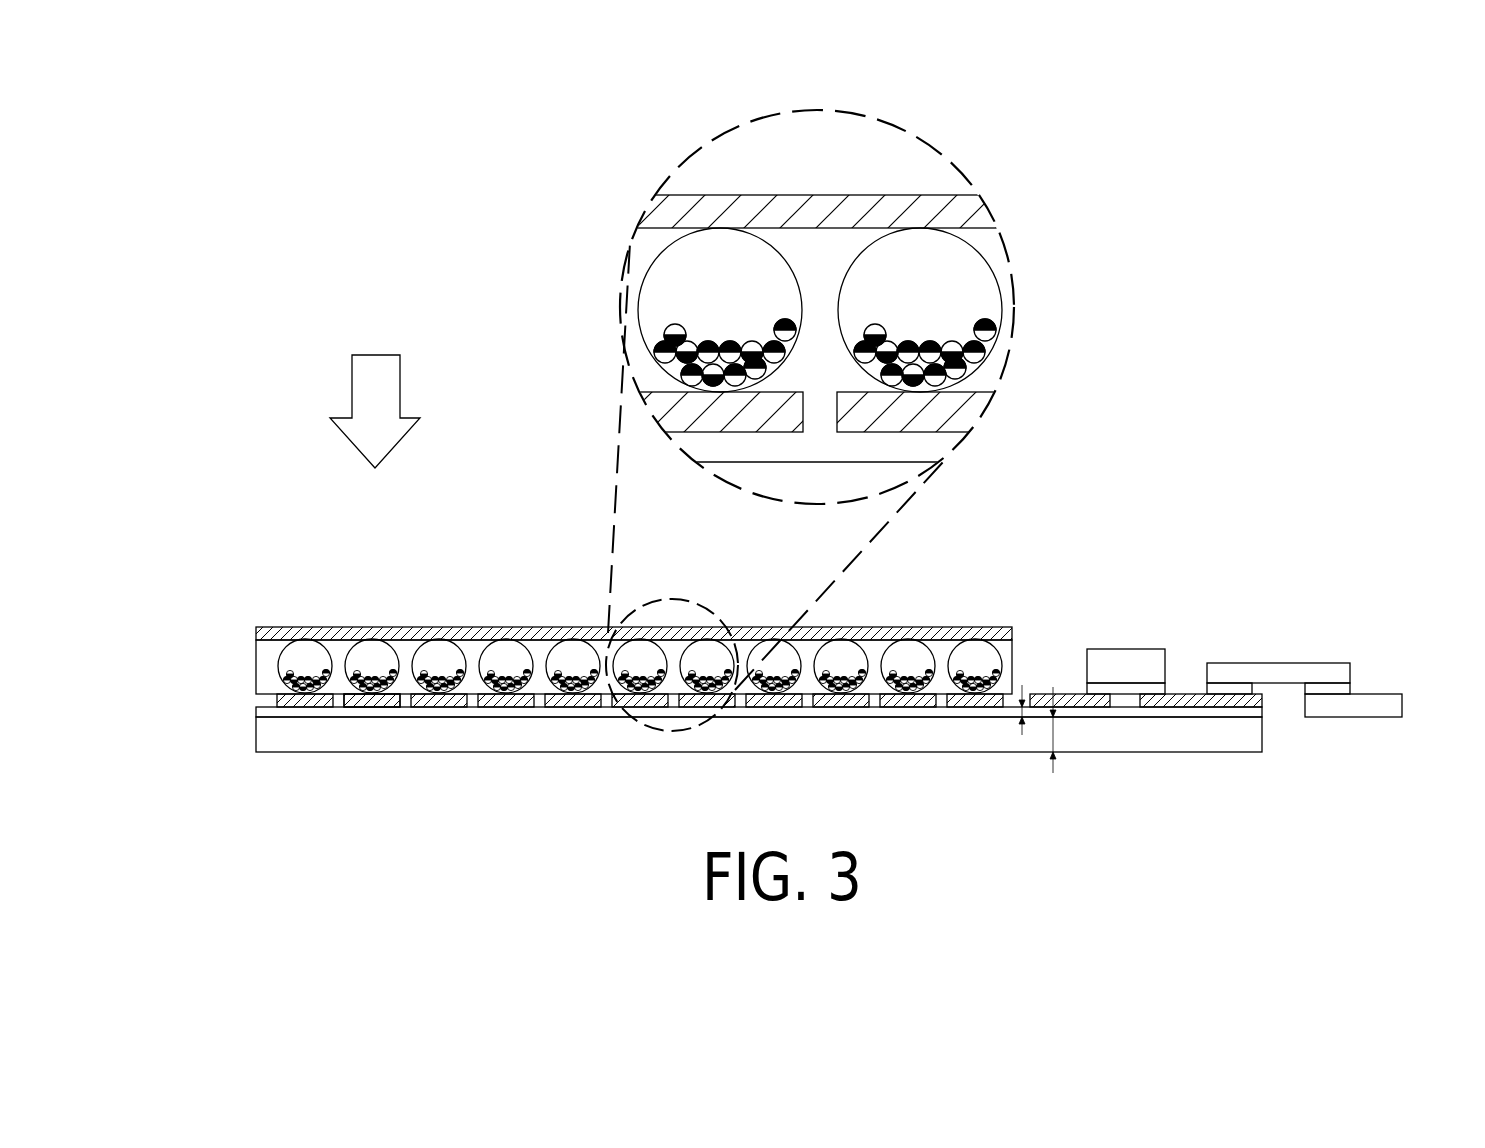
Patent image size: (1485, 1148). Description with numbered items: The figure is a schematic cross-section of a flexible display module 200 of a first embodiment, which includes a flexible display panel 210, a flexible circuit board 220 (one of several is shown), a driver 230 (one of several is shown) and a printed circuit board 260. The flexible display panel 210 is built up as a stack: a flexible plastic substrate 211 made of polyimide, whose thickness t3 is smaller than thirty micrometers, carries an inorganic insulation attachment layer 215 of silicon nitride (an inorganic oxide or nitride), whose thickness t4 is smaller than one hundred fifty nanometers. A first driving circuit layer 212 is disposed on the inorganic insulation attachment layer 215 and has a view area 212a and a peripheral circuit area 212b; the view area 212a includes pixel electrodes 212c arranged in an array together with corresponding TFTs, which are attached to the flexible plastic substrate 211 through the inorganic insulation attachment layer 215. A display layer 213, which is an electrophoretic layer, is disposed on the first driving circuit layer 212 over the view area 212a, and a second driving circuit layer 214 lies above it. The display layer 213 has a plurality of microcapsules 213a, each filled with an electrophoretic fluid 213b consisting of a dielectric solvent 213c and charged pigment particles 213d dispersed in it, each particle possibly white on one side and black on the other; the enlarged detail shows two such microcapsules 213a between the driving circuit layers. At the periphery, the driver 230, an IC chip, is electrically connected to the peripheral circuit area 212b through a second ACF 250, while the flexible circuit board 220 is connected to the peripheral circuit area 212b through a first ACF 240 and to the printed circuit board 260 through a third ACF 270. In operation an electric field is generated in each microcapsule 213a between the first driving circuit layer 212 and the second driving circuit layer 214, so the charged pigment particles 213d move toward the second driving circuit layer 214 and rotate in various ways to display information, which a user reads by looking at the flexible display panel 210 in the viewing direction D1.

The flexible display module 200 is at (1442, 829).
The flexible display panel 210 is at (165, 617).
The flexible plastic substrate 211 is at (256, 740).
The first driving circuit layer 212 is at (720, 644).
The view area 212a is at (934, 684).
The peripheral circuit area 212b is at (1066, 670).
The pixel electrode 212c is at (370, 707).
The display layer 213 is at (642, 442).
The microcapsule 213a is at (486, 627).
The electrophoretic fluid 213b is at (731, 310).
The dielectric solvent 213c is at (640, 295).
The charged pigment particle 213d is at (655, 336).
The second driving circuit layer 214 is at (253, 635).
The inorganic insulation attachment layer 215 is at (256, 712).
The flexible circuit board 220 is at (1293, 672).
The driver 230 is at (1140, 656).
The first ACF 240 is at (1230, 688).
The second ACF 250 is at (1130, 688).
The printed circuit board 260 is at (1395, 705).
The third ACF 270 is at (1330, 688).
The thickness of the flexible plastic substrate t3 is at (1053, 730).
The thickness of the inorganic insulation attachment layer t4 is at (1020, 712).
The viewing direction D1 is at (353, 377).